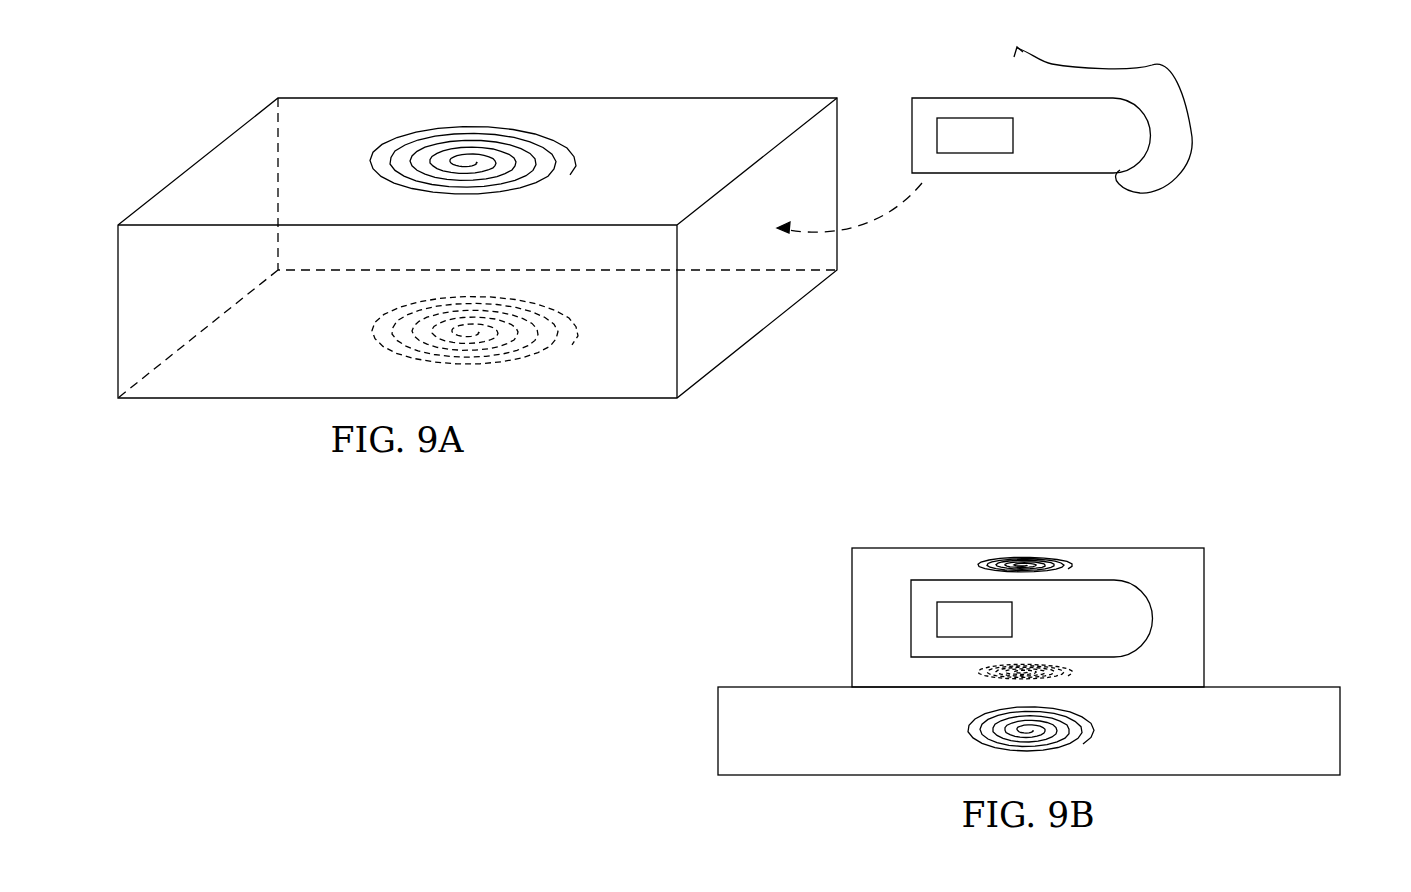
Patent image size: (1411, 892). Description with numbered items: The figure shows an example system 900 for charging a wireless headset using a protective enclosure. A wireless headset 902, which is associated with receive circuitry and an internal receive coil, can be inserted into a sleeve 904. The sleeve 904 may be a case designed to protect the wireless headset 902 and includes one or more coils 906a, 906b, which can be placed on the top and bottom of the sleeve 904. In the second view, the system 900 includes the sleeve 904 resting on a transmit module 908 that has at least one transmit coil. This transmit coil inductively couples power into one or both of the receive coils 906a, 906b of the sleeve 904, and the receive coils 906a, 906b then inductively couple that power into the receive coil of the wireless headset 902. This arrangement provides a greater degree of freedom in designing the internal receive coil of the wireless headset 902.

In FIG. 9B, the system 900 is at (1104, 515).
In FIG. 9A, the wireless headset 902 is at (1037, 175).
In FIG. 9A, the sleeve 904 is at (497, 98).
In FIG. 9A, the coil 906a is at (573, 150).
In FIG. 9A, the coil 906b is at (360, 332).
In FIG. 9B, the transmit module 908 is at (1340, 730).